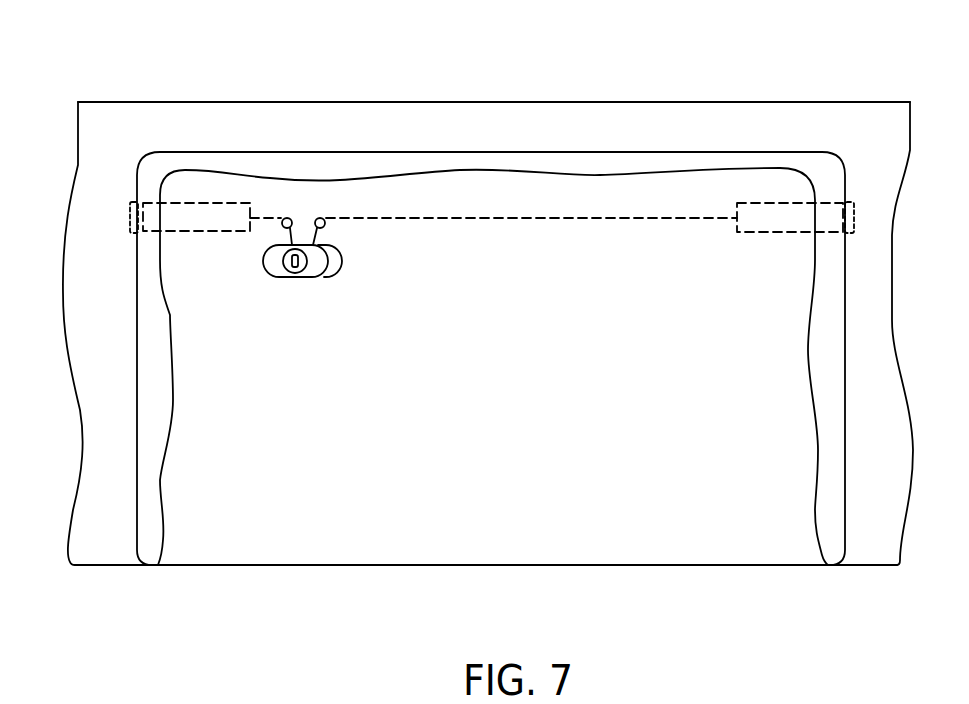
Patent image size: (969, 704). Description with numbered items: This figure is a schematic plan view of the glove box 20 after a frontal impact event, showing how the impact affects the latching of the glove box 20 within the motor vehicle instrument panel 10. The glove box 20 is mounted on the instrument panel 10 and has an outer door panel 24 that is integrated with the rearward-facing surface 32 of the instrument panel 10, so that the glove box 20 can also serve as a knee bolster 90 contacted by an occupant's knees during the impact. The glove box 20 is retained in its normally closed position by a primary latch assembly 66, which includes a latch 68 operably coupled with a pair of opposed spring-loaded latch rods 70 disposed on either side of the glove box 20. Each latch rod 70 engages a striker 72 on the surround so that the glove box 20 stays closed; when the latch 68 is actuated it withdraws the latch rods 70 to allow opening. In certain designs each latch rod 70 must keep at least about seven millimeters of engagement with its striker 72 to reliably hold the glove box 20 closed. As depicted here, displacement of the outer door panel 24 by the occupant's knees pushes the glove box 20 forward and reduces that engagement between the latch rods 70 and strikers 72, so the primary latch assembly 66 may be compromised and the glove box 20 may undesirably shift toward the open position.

The motor vehicle instrument panel 10 is at (853, 123).
The glove box 20 is at (773, 347).
The outer door panel 24 is at (230, 533).
The rearward-facing surface 32 is at (97, 378).
The primary latch assembly 66 is at (433, 213).
The latch 68 is at (303, 245).
The spring-loaded latch rods 70 is at (152, 208).
The striker 72 is at (128, 212).
The knee bolster 90 is at (582, 535).